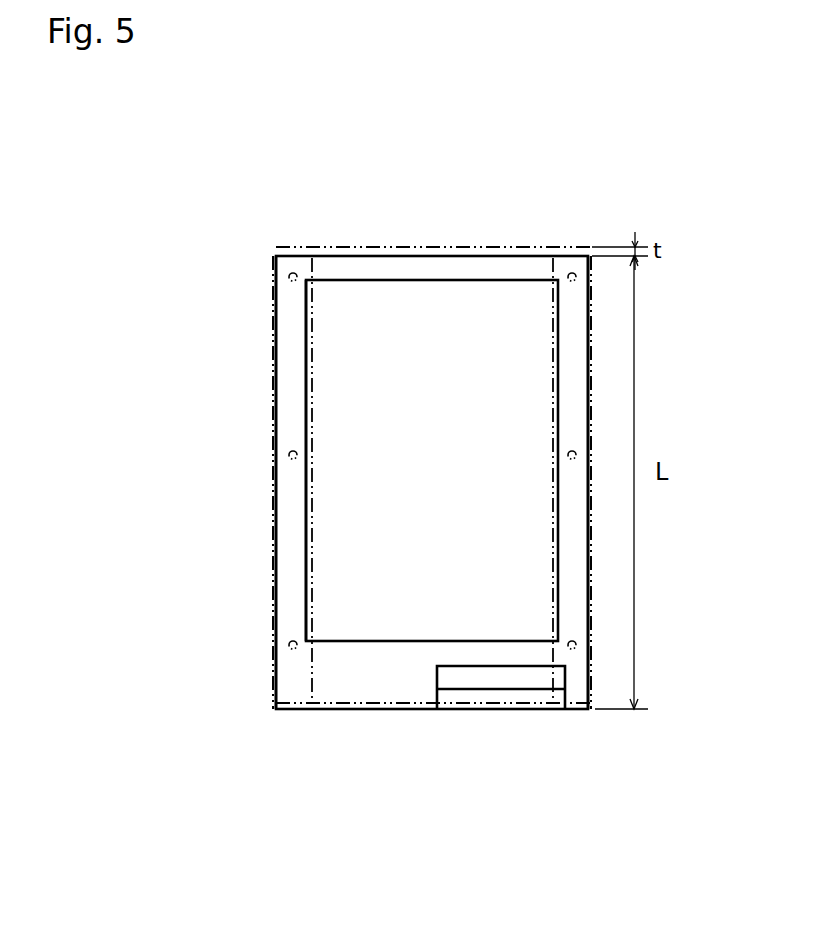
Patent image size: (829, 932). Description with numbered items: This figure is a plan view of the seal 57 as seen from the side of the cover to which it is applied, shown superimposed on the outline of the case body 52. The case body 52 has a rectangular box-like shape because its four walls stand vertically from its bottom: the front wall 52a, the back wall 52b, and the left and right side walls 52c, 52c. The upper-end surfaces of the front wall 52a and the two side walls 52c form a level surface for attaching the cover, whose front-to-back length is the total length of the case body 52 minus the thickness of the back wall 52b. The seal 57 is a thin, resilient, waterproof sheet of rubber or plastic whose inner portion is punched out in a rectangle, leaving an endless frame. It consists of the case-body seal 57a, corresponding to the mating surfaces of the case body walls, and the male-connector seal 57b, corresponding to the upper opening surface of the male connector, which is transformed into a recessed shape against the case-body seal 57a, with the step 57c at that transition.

The case body 52 is at (275, 352).
The front wall 52a is at (520, 718).
The back wall 52b is at (382, 247).
The side wall 52c is at (275, 404).
The seal 57 is at (476, 270).
The case-body seal 57a is at (290, 530).
The male-connector seal 57b is at (528, 686).
The step of tab portion 57c is at (445, 700).